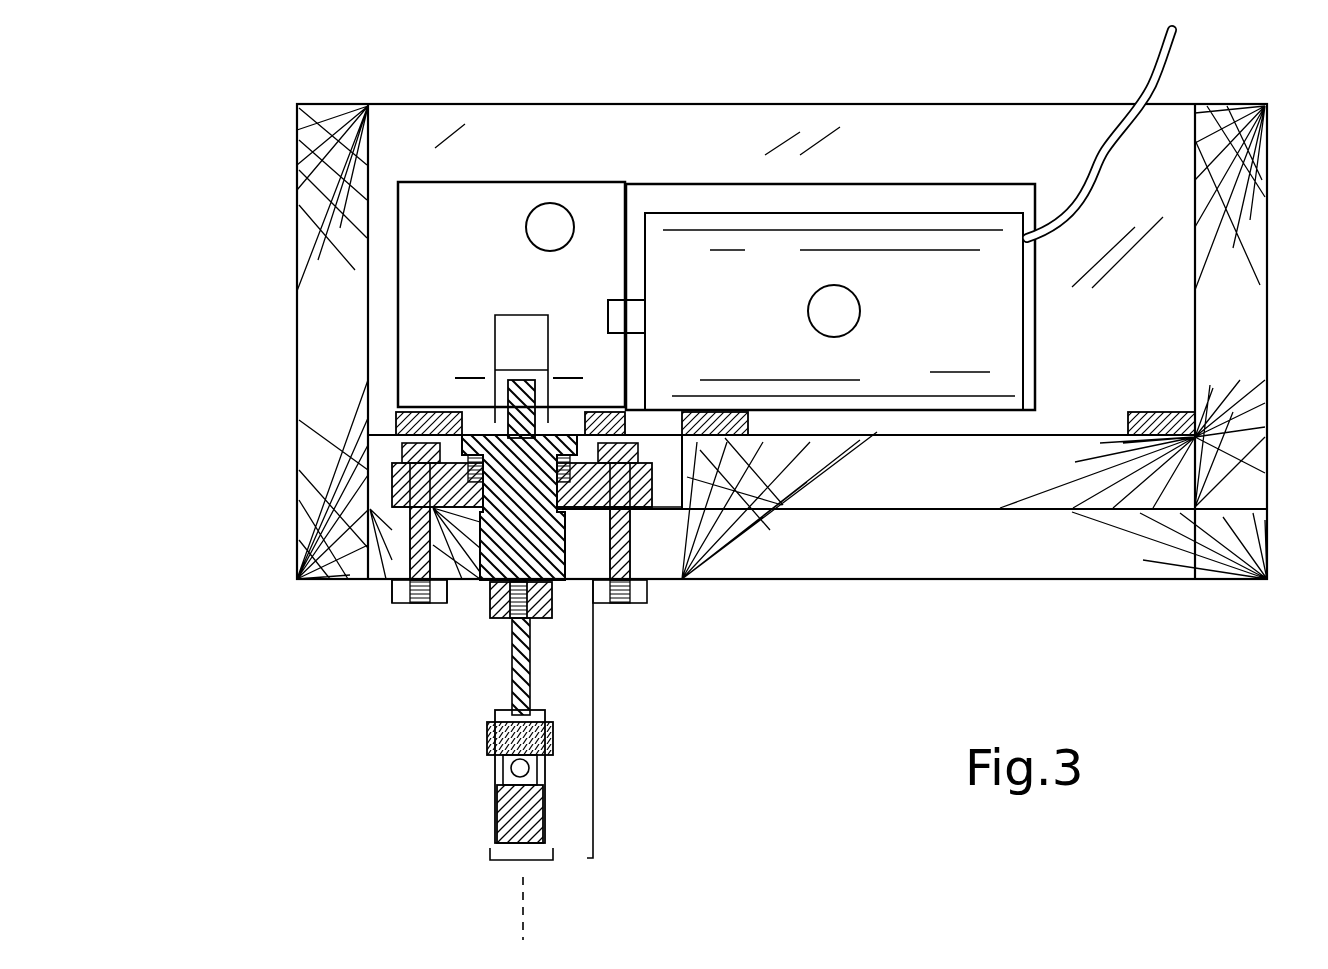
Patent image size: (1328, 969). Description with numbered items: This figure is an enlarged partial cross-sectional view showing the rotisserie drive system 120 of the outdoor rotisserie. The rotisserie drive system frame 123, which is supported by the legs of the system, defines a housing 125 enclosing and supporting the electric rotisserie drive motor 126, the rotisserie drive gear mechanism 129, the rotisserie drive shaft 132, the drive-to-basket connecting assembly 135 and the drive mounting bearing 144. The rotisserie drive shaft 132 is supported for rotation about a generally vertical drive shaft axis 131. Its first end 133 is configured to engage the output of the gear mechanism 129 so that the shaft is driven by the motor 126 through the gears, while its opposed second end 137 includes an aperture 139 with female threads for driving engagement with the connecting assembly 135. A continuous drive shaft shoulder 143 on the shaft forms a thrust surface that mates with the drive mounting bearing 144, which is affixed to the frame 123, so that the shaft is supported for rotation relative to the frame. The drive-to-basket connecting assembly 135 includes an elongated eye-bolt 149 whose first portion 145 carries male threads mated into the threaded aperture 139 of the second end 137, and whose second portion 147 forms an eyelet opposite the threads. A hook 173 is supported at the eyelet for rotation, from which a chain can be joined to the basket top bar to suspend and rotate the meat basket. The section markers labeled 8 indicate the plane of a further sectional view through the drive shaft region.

The rotisserie drive system 120 is at (1327, 757).
The rotisserie drive system frame 123 is at (942, 580).
The housing 125 is at (1002, 142).
The electric rotisserie drive motor 126 is at (781, 330).
The rotisserie drive gear mechanism 129 is at (505, 268).
The drive shaft axis 131 is at (527, 920).
The rotisserie drive shaft 132 is at (480, 575).
The first end 133 is at (525, 372).
The drive-to-basket connecting assembly 135 is at (597, 785).
The second end 137 is at (518, 600).
The aperture 139 is at (540, 612).
The drive shaft shoulder 143 is at (476, 430).
The drive mounting bearing 144 is at (398, 450).
The first portion 145 is at (494, 633).
The second portion 147 is at (470, 787).
The elongated eye-bolt 149 is at (510, 692).
The hook 173 is at (507, 822).
The section line 8- 8 is at (470, 372).